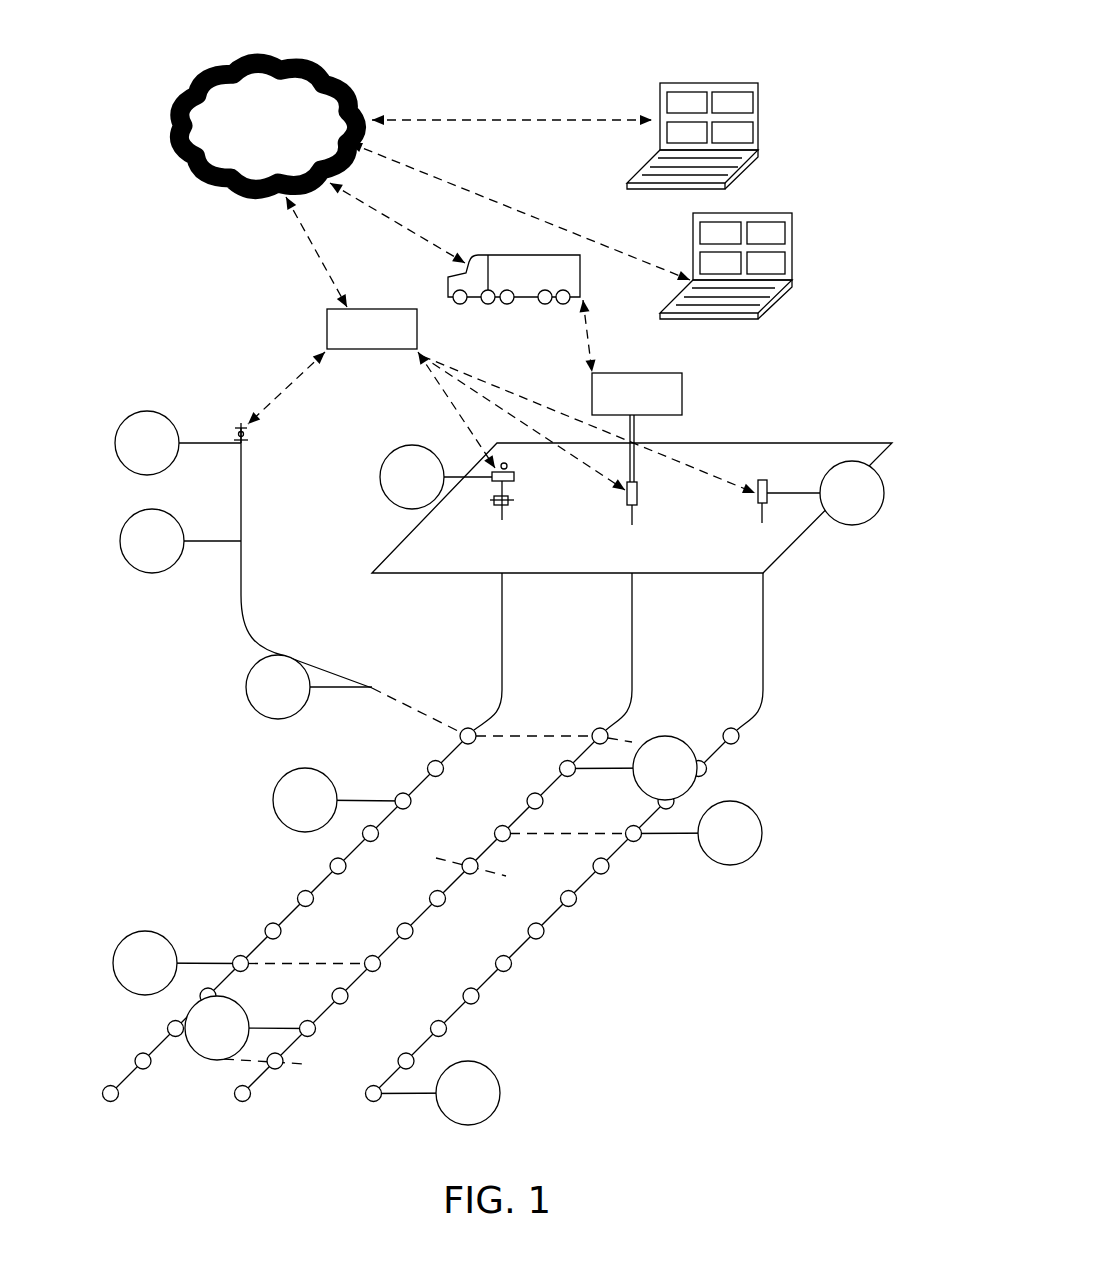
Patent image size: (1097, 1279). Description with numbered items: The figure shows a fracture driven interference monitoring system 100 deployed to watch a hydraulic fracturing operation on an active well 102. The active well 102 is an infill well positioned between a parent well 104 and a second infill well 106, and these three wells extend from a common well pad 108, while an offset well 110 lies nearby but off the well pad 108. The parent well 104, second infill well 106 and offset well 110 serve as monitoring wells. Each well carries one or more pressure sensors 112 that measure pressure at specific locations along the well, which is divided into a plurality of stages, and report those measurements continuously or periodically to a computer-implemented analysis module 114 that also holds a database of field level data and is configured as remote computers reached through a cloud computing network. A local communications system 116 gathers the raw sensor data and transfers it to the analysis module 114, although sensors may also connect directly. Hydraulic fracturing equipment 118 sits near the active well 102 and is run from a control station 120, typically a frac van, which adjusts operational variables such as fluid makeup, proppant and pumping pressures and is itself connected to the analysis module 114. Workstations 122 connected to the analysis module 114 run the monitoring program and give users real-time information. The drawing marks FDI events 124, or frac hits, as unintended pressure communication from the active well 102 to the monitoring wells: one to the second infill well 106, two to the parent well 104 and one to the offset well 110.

The fracture driven interference (FDI) monitoring system 100 is at (516, 86).
The active well 102 is at (632, 640).
The parent well 104 is at (502, 640).
The second infill well 106 is at (762, 640).
The well pad 108 is at (790, 523).
The offset well 110 is at (241, 423).
The pressure sensor 112 is at (115, 435).
The analysis module 114 is at (267, 126).
The local communications system 116 is at (372, 329).
The hydraulic fracturing equipment 118 is at (679, 449).
The control station 120 is at (514, 279).
The workstation 122 is at (758, 83).
The FDI event (frac hit) 124 is at (417, 707).